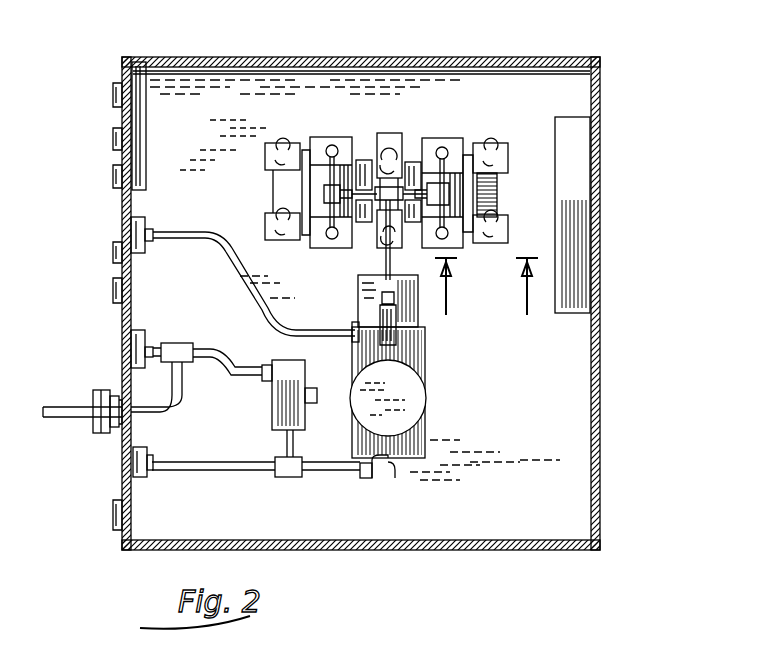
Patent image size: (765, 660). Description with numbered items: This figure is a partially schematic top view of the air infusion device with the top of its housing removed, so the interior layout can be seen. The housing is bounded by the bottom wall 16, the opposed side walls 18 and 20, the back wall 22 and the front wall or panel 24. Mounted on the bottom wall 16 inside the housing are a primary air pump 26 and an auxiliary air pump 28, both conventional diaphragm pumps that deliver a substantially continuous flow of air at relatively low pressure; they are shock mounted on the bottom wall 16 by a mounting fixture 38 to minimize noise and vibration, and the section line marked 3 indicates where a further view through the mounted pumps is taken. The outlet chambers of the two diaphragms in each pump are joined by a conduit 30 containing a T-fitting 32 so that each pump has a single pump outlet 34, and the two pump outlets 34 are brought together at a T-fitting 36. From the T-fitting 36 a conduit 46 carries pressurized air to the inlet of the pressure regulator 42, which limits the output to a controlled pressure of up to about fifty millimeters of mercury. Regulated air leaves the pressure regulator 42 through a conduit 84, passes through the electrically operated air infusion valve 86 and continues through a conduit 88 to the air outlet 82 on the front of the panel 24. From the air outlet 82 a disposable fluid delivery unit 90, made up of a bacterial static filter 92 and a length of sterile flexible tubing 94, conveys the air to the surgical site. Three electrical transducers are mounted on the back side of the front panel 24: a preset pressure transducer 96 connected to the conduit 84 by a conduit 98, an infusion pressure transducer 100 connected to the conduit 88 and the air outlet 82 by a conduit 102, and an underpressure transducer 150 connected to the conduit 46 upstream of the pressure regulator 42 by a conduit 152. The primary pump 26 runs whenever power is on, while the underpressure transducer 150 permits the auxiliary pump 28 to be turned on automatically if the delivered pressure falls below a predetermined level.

The section line 3- 3 is at (486, 296).
The bottom wall 16 is at (542, 436).
The side wall 18 is at (527, 57).
The side wall 20 is at (540, 550).
The back wall 22 is at (600, 352).
The front wall or panel 24 is at (122, 203).
The primary air pump 26 is at (340, 138).
The auxiliary air pump 28 is at (443, 137).
The conduit 30 is at (322, 172).
The T-fitting 32 is at (330, 190).
The pump outlet 34 is at (338, 235).
The T-fitting 36 is at (377, 232).
The mounting fixture 38 is at (280, 142).
The pressure regulator 42 is at (373, 397).
The conduit 46 is at (362, 287).
The air outlet 82 is at (122, 436).
The conduit 84 is at (340, 474).
The air infusion valve 86 is at (290, 405).
The conduit 88 is at (236, 366).
The fluid delivery unit 90 is at (60, 404).
The bacterial static filter 92 is at (98, 434).
The flexible tubing 94 is at (66, 418).
The preset pressure transducer 96 is at (142, 478).
The conduit 98 is at (225, 464).
The infusion pressure transducer 100 is at (141, 333).
The conduit 102 is at (166, 345).
The underpressure pressure transducer 150 is at (138, 224).
The conduit 152 is at (232, 258).